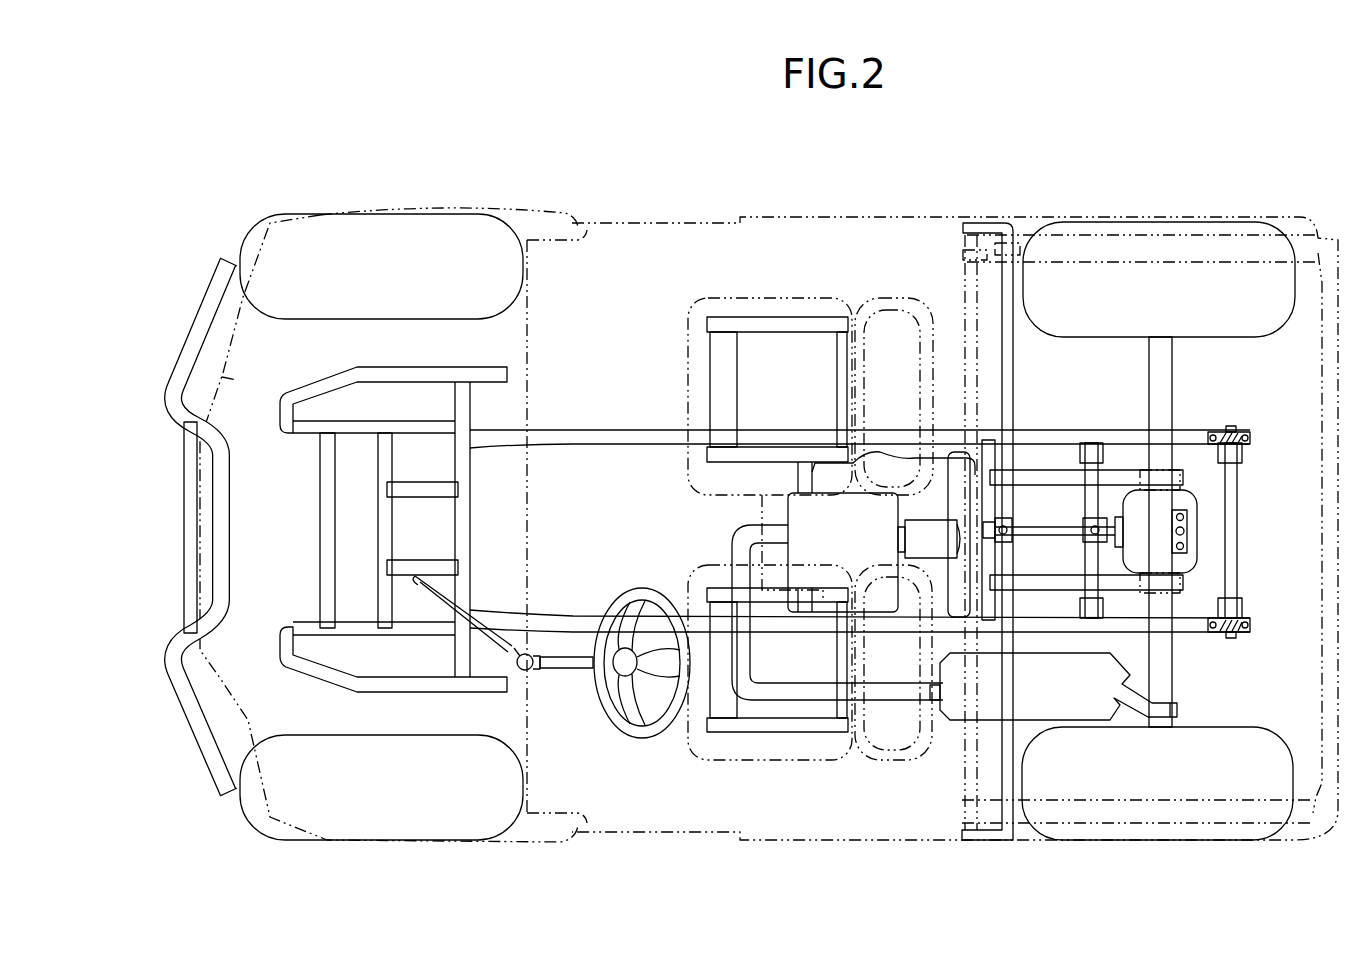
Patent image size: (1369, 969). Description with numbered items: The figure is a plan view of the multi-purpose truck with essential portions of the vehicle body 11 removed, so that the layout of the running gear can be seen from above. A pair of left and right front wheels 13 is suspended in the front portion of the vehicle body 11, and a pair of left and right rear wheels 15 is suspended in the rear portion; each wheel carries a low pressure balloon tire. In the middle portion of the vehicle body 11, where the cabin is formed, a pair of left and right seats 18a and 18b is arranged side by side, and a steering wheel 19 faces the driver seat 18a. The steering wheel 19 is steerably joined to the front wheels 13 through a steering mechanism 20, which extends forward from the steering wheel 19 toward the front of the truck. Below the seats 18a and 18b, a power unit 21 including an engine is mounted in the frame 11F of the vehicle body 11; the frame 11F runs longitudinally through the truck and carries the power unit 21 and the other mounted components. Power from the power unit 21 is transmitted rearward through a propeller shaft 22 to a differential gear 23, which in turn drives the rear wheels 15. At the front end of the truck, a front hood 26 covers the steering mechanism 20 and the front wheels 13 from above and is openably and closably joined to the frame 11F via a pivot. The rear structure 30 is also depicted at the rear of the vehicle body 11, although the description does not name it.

The vehicle body 11 is at (668, 222).
The frame 11F is at (613, 437).
The front wheels 13 is at (390, 236).
The rear wheels 15 is at (1137, 277).
The driver seat 18a is at (773, 747).
The seat 18b is at (753, 303).
The steering wheel 19 is at (642, 588).
The steering mechanism 20 is at (434, 595).
The power unit 21 is at (850, 541).
The propeller shaft 22 is at (1032, 530).
The differential gear 23 is at (1197, 535).
The front hood 26 is at (248, 720).
The rear frame 30 is at (1068, 250).